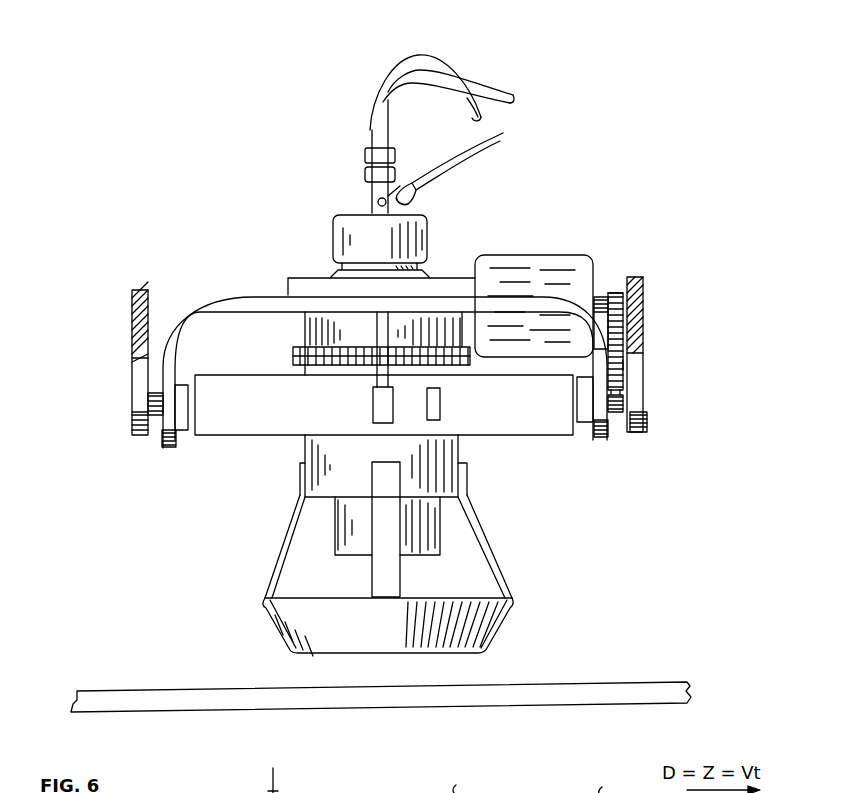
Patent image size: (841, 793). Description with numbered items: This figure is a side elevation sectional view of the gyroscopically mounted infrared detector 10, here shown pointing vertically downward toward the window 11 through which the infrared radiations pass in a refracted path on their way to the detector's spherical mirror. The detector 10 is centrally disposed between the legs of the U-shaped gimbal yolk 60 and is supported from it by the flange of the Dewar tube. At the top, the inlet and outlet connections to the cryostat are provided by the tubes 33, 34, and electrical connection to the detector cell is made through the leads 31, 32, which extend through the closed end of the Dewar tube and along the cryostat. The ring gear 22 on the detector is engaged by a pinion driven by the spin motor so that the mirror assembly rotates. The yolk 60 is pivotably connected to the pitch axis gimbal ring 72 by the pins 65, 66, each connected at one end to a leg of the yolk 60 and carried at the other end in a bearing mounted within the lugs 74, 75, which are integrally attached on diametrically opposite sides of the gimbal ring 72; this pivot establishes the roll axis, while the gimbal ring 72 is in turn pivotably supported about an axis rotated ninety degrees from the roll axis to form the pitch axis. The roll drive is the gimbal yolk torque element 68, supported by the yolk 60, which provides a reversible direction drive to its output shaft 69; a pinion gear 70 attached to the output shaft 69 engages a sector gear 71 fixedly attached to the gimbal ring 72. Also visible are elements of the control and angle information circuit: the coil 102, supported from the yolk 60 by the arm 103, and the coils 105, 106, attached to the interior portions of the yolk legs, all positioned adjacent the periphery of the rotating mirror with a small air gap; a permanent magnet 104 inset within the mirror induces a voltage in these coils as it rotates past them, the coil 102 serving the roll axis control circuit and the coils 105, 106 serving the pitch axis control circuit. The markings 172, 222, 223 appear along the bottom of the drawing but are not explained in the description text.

The detector 10 is at (295, 477).
The window 11 is at (73, 702).
The ring gear 22 is at (293, 353).
The lead 31 is at (400, 181).
The lead 32 is at (401, 196).
The tube 33 is at (397, 67).
The tube 34 is at (490, 93).
The gimbal yolk 60 is at (254, 298).
The pin 65 is at (618, 424).
The pin 66 is at (156, 418).
The gimbal yolk torque element 68 is at (503, 263).
The output shaft 69 is at (601, 300).
The pinion gear 70 is at (618, 296).
The sector gear 71 is at (627, 363).
The pitch axis gimbal ring 72 is at (640, 323).
The lug 74 is at (633, 434).
The lug 75 is at (137, 368).
The coil 102 is at (373, 415).
The arm 103 is at (377, 335).
The permanent magnet 104 is at (440, 405).
The coil 105 is at (182, 431).
The coil 106 is at (583, 425).
The reference marker 172 is at (276, 779).
The position marker 222 is at (477, 781).
The position marker 223 is at (609, 777).